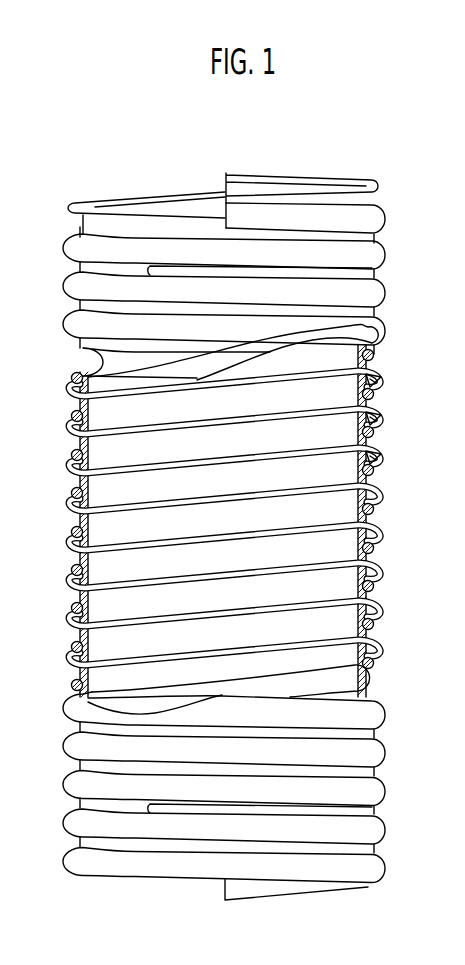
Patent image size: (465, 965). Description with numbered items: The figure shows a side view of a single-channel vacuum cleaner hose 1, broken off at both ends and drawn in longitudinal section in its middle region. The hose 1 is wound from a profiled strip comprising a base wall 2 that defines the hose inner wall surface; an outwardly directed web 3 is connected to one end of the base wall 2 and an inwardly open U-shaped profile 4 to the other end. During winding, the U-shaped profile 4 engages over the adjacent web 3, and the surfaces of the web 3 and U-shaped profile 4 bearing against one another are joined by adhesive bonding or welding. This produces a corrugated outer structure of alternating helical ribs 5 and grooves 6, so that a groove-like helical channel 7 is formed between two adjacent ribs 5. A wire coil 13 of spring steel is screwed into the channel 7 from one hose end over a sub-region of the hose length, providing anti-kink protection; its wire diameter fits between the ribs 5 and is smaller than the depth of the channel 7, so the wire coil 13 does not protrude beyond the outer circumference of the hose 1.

The single-channel hose 1 is at (304, 164).
The base wall 2 is at (358, 353).
The web 3 is at (372, 346).
The U-shaped profile 4 is at (373, 333).
The ribs 5 is at (394, 204).
The grooves 6 is at (378, 188).
The groove-like helical channel 7 is at (376, 234).
The wire coil 13 is at (373, 277).